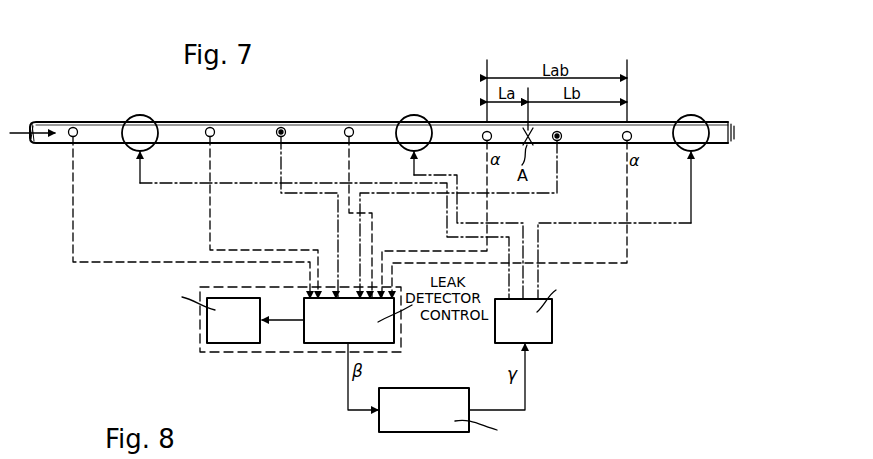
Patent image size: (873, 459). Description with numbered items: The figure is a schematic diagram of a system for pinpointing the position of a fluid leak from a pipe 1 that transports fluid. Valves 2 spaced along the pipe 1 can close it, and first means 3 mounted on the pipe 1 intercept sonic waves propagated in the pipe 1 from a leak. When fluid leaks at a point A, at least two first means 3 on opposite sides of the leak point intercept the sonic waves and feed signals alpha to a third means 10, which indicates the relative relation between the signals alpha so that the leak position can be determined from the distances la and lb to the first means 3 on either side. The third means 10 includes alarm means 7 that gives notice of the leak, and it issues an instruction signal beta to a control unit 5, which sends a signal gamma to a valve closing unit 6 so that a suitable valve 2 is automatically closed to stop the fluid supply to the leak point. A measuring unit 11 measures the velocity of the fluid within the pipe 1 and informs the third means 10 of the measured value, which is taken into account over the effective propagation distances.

The pipe 1 is at (315, 127).
The valve 2 is at (150, 119).
The first means 3 is at (73, 127).
The control unit 5 is at (424, 398).
The valve closing unit 6 is at (552, 323).
The alarm unit 7 is at (215, 318).
The third means 10 is at (287, 352).
The measuring unit 11 is at (281, 127).